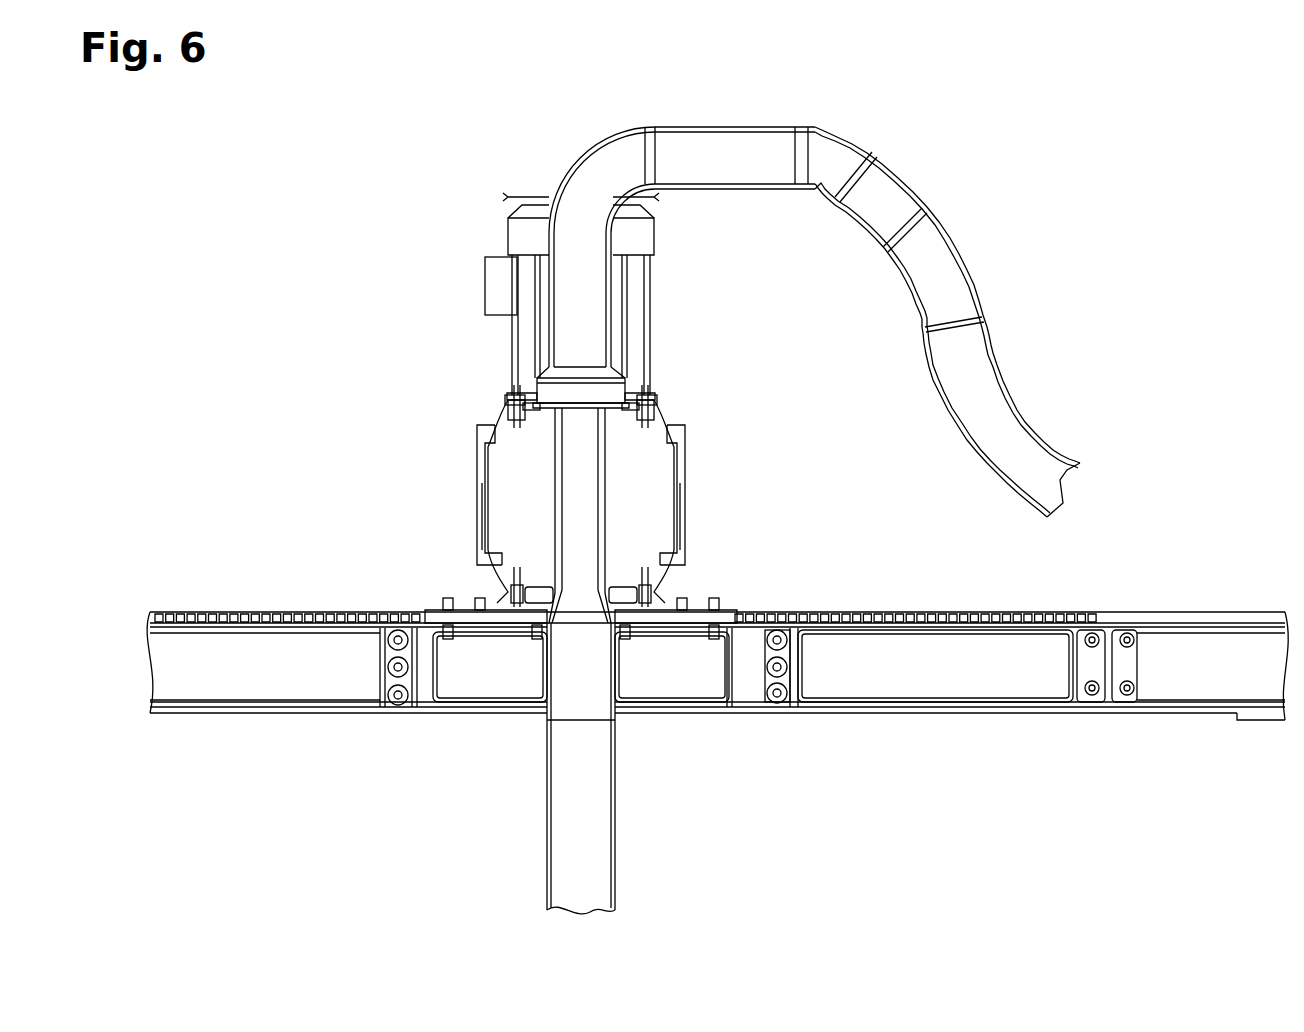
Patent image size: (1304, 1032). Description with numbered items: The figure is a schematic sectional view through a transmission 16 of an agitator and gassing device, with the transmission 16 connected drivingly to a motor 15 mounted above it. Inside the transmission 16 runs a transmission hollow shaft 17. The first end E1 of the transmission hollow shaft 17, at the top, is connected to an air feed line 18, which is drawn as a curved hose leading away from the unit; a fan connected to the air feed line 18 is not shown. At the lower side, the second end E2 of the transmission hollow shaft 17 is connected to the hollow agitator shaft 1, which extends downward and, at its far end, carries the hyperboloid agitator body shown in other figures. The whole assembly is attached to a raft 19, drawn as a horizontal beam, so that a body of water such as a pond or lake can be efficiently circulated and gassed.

The hollow agitator shaft 1 is at (616, 861).
The motor 15 is at (635, 332).
The transmission 16 is at (477, 513).
The transmission hollow shaft 17 is at (600, 507).
The air feed line 18 is at (732, 167).
The raft 19 is at (1033, 640).
The upper connection point E1 is at (603, 412).
The second end E2 is at (650, 592).